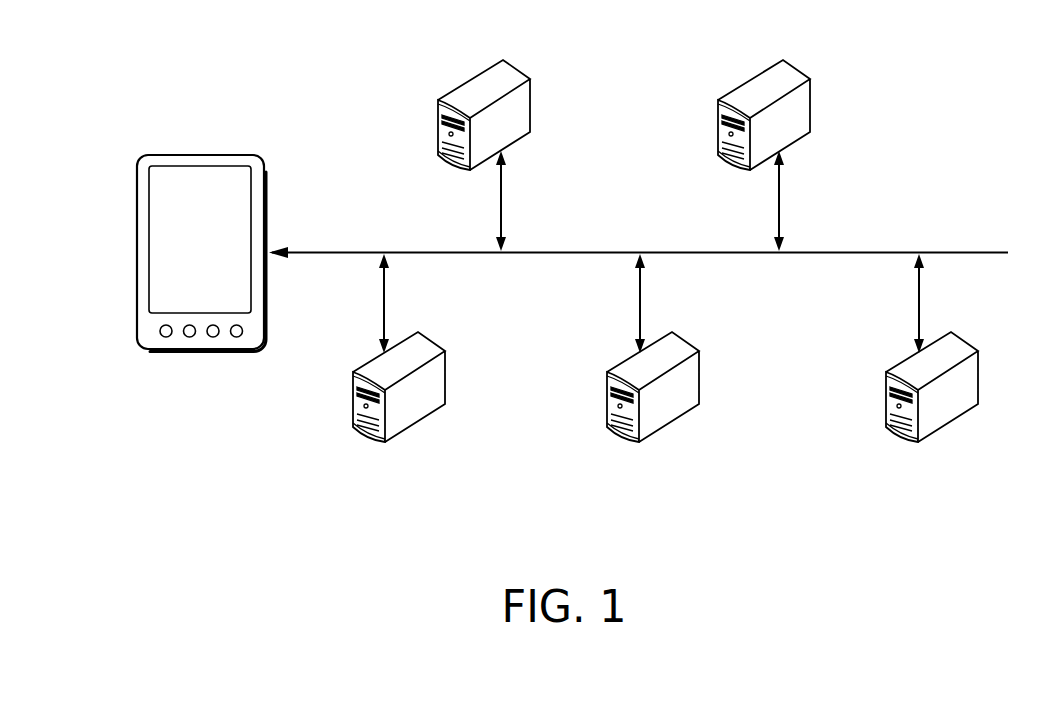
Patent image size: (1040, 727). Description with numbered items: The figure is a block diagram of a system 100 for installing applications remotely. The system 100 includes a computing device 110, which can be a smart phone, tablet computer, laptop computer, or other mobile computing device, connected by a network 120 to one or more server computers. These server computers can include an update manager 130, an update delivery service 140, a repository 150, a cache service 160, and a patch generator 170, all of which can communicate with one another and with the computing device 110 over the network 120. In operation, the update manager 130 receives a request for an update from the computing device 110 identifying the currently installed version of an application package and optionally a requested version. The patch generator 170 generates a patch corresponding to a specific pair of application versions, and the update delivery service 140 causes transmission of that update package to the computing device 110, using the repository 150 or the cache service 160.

The system 100 is at (96, 72).
The computing device 110 is at (201, 154).
The network 120 is at (966, 251).
The update manager 130 is at (470, 80).
The update delivery service 140 is at (750, 80).
The repository 150 is at (436, 345).
The cache service 160 is at (690, 345).
The patch generator 170 is at (969, 345).